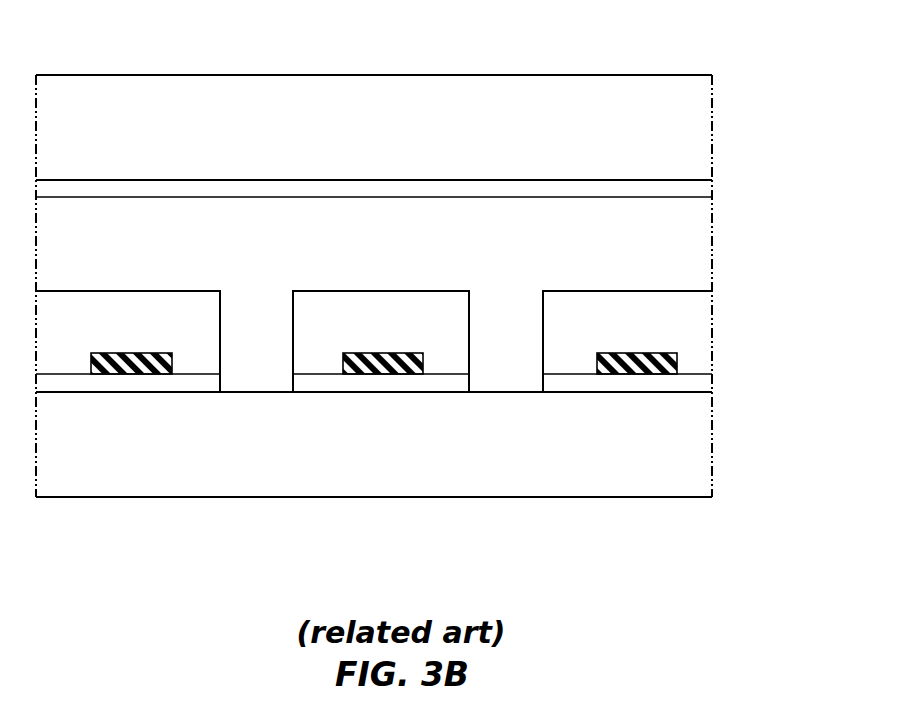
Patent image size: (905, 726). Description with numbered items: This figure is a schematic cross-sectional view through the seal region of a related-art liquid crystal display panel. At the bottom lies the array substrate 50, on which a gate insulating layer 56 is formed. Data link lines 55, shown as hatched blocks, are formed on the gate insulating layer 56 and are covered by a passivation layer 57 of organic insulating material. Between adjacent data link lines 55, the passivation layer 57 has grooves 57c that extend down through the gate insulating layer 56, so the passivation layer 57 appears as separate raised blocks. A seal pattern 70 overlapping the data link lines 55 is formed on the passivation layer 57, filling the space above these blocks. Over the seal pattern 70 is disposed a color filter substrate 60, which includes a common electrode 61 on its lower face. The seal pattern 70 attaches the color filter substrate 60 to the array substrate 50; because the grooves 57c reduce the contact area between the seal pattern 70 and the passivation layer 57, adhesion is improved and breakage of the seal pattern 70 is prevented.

The array substrate 50 is at (282, 462).
The data link line 55 is at (156, 352).
The gate insulating layer 56 is at (130, 383).
The passivation layer 57 is at (108, 333).
The groove 57c is at (258, 352).
The color filter substrate 60 is at (568, 124).
The common electrode 61 is at (297, 188).
The seal pattern 70 is at (683, 212).